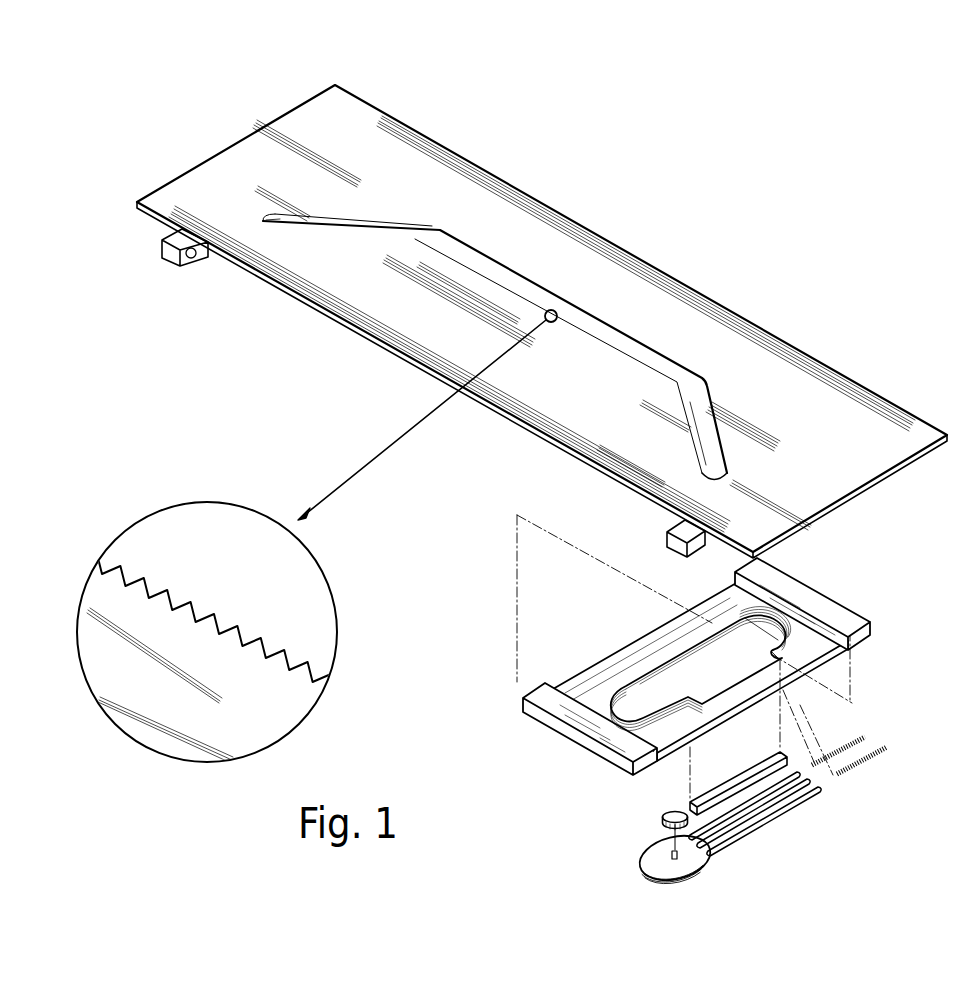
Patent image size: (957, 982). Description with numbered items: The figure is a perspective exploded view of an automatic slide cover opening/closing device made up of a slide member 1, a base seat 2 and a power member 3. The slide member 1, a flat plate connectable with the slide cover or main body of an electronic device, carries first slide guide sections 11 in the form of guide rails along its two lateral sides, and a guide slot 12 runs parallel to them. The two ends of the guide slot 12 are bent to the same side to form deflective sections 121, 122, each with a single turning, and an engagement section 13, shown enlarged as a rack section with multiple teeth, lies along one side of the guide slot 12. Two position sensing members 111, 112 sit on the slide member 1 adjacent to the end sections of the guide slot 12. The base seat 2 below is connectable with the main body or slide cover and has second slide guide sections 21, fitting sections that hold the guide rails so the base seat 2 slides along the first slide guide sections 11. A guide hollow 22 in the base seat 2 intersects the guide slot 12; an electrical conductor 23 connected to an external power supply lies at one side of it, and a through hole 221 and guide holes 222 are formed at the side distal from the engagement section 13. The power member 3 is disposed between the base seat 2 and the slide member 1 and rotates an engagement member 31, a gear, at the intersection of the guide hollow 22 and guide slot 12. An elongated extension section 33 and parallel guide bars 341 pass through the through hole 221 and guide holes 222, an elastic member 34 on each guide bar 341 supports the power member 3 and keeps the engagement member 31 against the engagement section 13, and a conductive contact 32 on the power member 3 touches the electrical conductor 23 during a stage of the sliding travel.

The slide member 1 is at (830, 384).
The first slide guide section 11 is at (583, 222).
The position sensing member 111 is at (666, 540).
The position sensing member 112 is at (180, 262).
The guide slot 12 is at (615, 340).
The deflective section 121 is at (707, 456).
The deflective section 122 is at (335, 227).
The engagement section 13 is at (133, 568).
The base seat 2 is at (556, 735).
The second slide guide section 21 is at (580, 697).
The guide hollow 22 is at (674, 682).
The through hole 221 is at (765, 612).
The guide hole 222 is at (762, 612).
The electrical conductor 23 is at (747, 776).
The power member 3 is at (648, 853).
The engagement member 31 is at (663, 815).
The conductive contact 32 is at (698, 872).
The extension section 33 is at (810, 798).
The elastic member 34 is at (887, 748).
The guide bar 341 is at (775, 820).